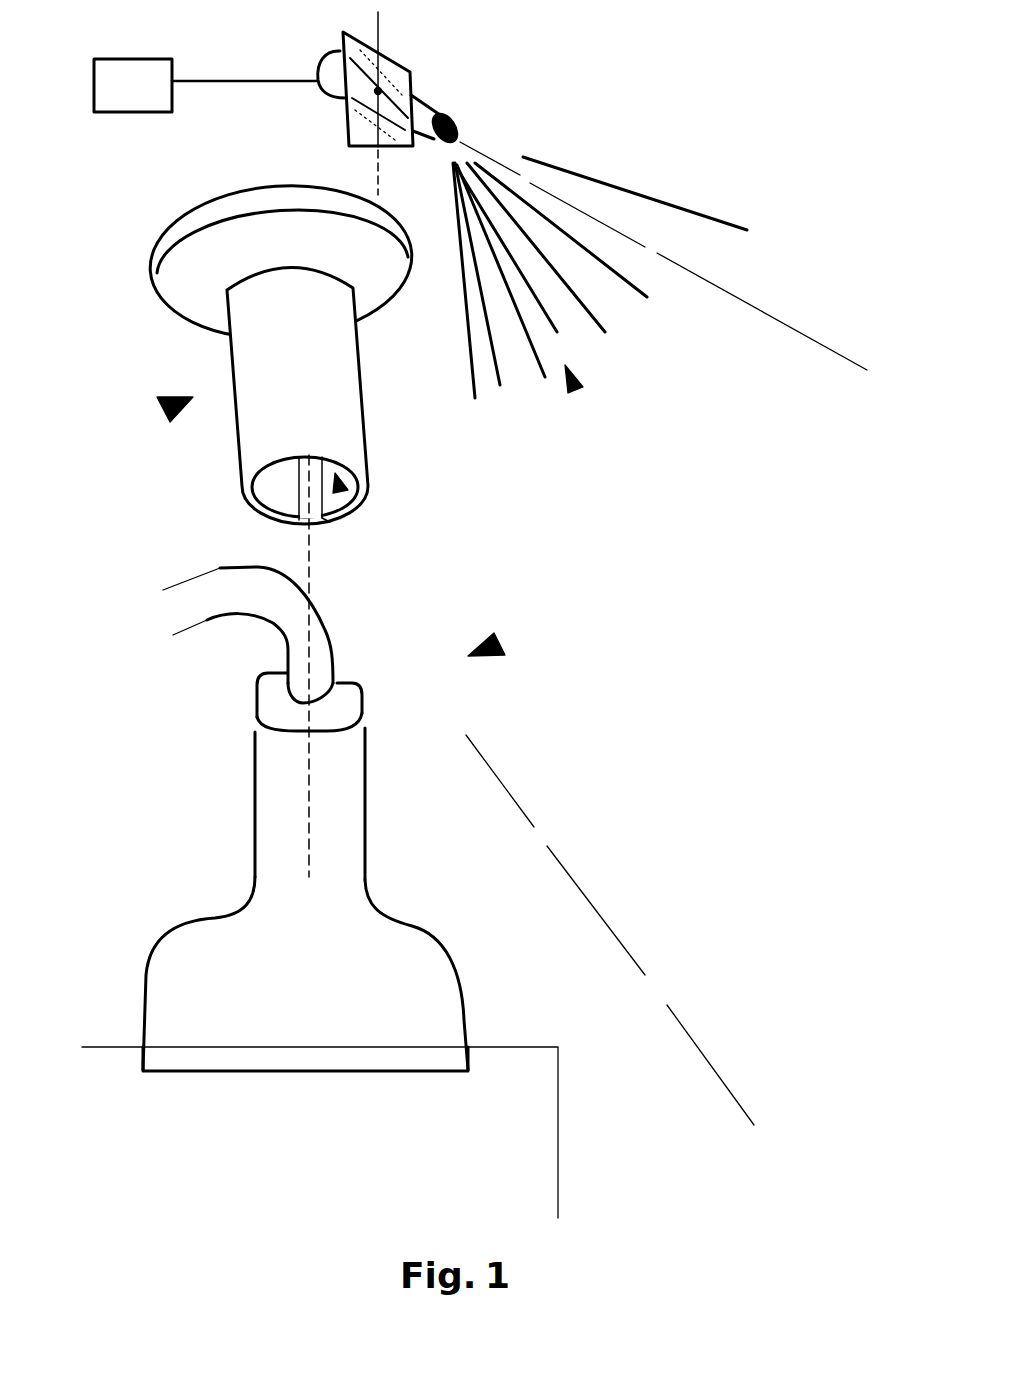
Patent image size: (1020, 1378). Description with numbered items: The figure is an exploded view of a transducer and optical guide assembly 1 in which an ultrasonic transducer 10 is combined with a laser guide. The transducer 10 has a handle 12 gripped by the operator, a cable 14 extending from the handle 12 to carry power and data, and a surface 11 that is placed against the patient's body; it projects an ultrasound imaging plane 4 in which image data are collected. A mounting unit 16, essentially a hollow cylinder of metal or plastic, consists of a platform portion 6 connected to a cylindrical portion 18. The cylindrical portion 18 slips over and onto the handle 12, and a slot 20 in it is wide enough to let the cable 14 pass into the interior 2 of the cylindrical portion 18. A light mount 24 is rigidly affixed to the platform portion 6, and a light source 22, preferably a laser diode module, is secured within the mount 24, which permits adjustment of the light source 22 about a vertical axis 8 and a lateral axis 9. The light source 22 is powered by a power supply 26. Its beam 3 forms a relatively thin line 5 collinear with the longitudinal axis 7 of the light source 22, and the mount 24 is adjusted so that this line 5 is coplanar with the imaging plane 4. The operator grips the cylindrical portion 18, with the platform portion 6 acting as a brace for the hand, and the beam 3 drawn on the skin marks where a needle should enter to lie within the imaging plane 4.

The transducer and optical guide assembly 1 is at (500, 641).
The interior of cylindrical portion 2 is at (345, 490).
The beam 3 is at (569, 391).
The ultrasound imaging plane 4 is at (320, 1132).
The thin line (laser beam) 5 is at (788, 327).
The platform portion 6 is at (188, 280).
The longitudinal axis of the light source 7 is at (285, 65).
The vertical axis 8 is at (380, 37).
The lateral axis 9 is at (345, 95).
The ultrasonic transducer 10 is at (145, 985).
The surface of transducer 11 is at (365, 1071).
The handle 12 is at (253, 810).
The cable 14 is at (195, 628).
The mounting unit 16 is at (160, 412).
The cylindrical portion 18 is at (255, 417).
The slot 20 is at (318, 503).
The light source 22 is at (433, 97).
The light mount 24 is at (343, 132).
The power supply 26 is at (206, 85).